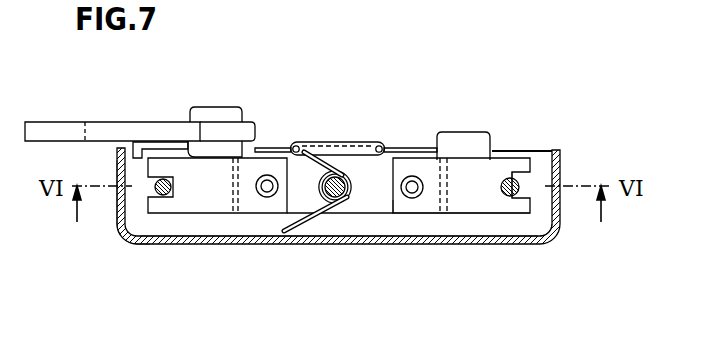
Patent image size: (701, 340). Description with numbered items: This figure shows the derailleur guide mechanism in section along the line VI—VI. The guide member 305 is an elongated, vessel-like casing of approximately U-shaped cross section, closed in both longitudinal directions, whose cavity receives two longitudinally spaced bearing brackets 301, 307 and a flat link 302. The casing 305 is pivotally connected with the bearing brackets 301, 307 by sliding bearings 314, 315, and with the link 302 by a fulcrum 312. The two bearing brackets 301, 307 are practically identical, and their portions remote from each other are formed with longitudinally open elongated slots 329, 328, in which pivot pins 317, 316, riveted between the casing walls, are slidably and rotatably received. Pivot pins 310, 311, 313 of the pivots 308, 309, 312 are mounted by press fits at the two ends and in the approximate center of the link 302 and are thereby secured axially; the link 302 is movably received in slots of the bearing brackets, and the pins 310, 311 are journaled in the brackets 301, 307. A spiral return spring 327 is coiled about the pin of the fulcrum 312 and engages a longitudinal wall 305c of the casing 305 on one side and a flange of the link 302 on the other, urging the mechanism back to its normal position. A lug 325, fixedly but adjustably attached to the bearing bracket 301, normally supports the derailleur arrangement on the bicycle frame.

The bearing bracket 301 is at (193, 203).
The flat link 302 is at (377, 201).
The guide member 305 is at (345, 238).
The longitudinal wall 305c is at (240, 246).
The bearing bracket 307 is at (498, 203).
The pivot 308 is at (258, 199).
The pivot 309 is at (422, 200).
The pivot pin 310 is at (264, 177).
The pivot pin 311 is at (412, 177).
The fulcrum 312 is at (336, 166).
The pivot pin 313 is at (342, 176).
The sliding bearing 314 is at (541, 198).
The sliding bearing 315 is at (137, 198).
The pivot pin 316 is at (508, 176).
The pivot pin 317 is at (166, 198).
The lug 325 is at (55, 127).
The spiral return spring 327 is at (303, 237).
The elongated slot 328 is at (523, 184).
The elongated slot 329 is at (134, 166).